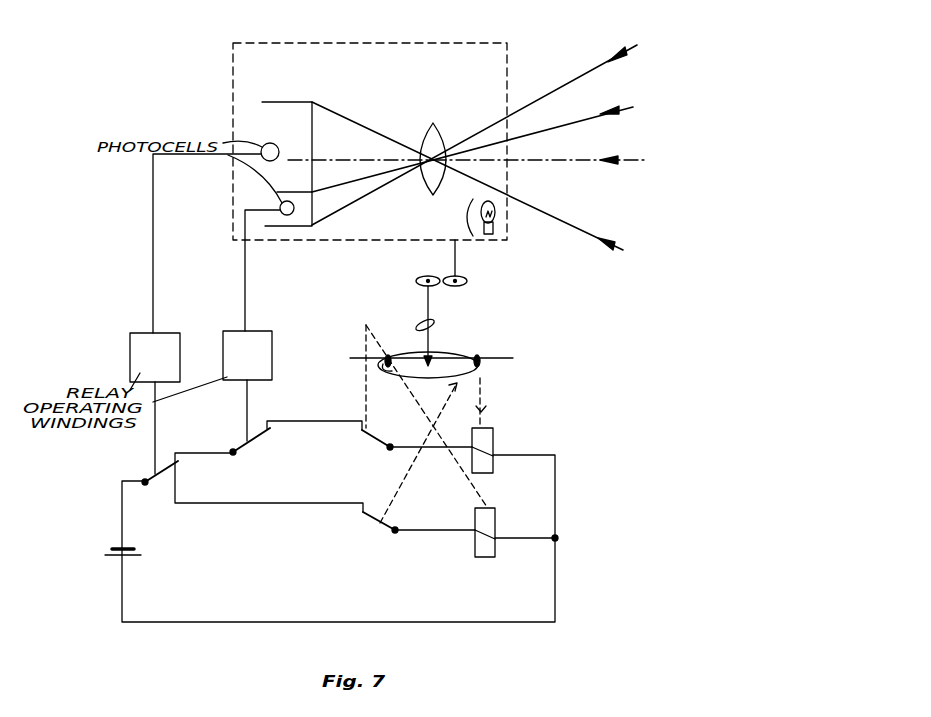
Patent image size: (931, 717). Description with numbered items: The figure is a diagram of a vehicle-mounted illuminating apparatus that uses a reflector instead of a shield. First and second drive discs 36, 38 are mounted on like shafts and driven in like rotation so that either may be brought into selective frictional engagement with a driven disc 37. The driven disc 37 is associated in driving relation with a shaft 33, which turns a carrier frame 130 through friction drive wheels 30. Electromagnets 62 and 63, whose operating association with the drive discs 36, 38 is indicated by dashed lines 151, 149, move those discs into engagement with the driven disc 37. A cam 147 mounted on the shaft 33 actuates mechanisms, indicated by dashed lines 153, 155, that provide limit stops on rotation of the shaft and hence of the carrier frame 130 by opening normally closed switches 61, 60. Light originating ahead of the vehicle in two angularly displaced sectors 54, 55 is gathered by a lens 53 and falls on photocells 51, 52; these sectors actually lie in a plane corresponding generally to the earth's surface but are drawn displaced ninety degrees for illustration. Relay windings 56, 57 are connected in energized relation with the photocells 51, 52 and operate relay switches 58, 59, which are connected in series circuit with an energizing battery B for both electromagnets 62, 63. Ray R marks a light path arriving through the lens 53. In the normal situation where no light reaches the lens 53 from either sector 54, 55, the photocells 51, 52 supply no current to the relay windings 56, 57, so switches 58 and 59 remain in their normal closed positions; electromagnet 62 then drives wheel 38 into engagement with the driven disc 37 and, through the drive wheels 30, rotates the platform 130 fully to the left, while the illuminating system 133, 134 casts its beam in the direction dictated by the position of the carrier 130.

The friction drive wheels 30 is at (449, 275).
The shaft 33 is at (434, 303).
The first drive disc 36 is at (385, 357).
The driven disc 37 is at (388, 366).
The second drive disc 38 is at (478, 355).
The photocell 51 is at (216, 228).
The photocell 52 is at (261, 243).
The lens 53 is at (448, 143).
The angular sector 54 is at (575, 192).
The angular sector 55 is at (580, 117).
The relay winding 56 is at (135, 352).
The relay winding 57 is at (267, 345).
The relay switch 58 is at (175, 470).
The relay switch 59 is at (256, 440).
The normally closed switch 60 is at (369, 445).
The normally closed switch 61 is at (380, 519).
The electromagnet 62 is at (500, 446).
The electromagnet 63 is at (497, 509).
The carrier frame 130 is at (345, 246).
The illuminating system 133 is at (466, 214).
The illuminating system 134 is at (496, 214).
The cam 147 is at (421, 321).
The dashed line 149 is at (492, 483).
The dashed line 151 is at (488, 405).
The dashed line 153 is at (404, 497).
The dashed line 155 is at (367, 403).
The reference ray R is at (610, 53).
The battery B is at (112, 549).